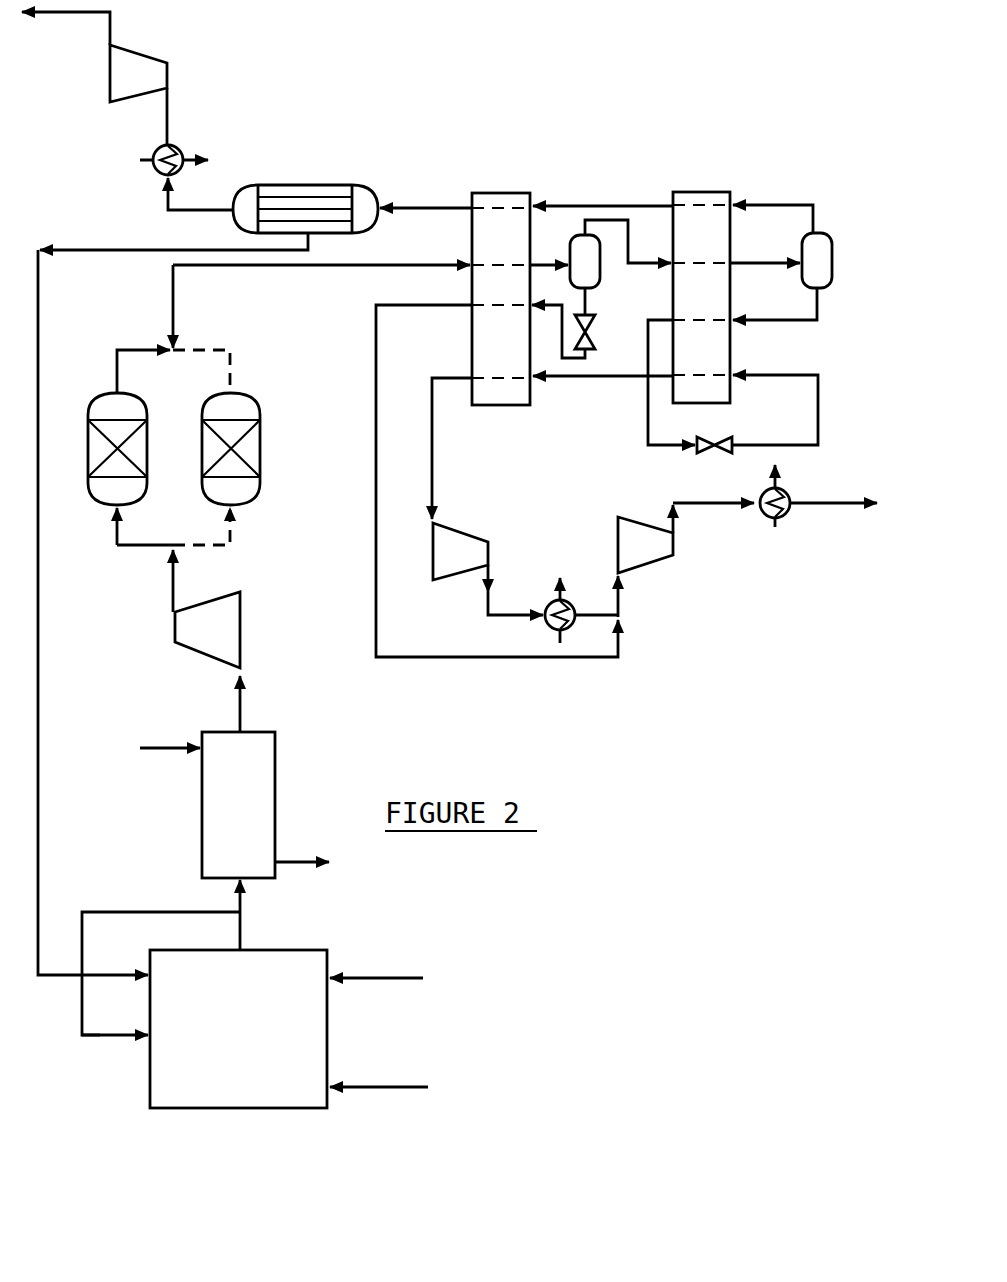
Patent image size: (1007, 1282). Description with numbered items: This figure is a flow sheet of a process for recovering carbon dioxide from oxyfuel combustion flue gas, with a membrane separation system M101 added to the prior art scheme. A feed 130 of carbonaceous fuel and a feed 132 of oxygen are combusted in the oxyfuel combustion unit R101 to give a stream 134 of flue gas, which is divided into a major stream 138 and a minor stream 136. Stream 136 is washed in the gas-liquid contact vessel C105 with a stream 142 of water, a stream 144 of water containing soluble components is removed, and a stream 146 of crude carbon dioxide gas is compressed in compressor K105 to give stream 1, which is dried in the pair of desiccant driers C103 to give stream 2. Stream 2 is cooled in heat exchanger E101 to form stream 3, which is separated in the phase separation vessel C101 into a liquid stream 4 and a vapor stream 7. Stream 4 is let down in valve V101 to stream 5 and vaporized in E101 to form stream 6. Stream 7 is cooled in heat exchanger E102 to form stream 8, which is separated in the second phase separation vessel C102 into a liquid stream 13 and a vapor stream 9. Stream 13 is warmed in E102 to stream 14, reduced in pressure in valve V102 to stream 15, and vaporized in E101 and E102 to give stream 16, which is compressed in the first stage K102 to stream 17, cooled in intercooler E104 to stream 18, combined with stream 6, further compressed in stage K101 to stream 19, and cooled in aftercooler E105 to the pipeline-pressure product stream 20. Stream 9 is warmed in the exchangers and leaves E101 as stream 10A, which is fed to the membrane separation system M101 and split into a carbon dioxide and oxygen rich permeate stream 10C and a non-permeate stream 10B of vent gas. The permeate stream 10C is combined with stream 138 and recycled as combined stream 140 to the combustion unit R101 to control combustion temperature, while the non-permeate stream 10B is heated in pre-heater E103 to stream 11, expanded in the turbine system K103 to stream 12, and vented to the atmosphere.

The stream of compressed crude carbon dioxide 1 is at (175, 594).
The stream of dried waste carbon dioxide gas 2 is at (300, 268).
The stream of crude gaseous carbon dioxide 3 is at (553, 250).
The stream of first carbon dioxide-enriched liquid 4 is at (588, 308).
The stream of reduced pressure first carbon dioxide-enriched liquid 5 is at (552, 310).
The stream of first carbon dioxide-enriched gas 6 is at (375, 333).
The stream of first vapor 7 is at (648, 262).
The stream of partially condensed fluid 8 is at (778, 262).
The stream of second vapor 9 is at (800, 203).
The stream of warmed second gas 10A is at (418, 206).
The non-permeate stream of vent gas 10B is at (198, 212).
The permeate stream 10C is at (40, 322).
The stream of heated vent gas 11 is at (168, 118).
The stream of expanded vent gas 12 is at (85, 15).
The stream of second carbon dioxide-enriched liquid 13 is at (816, 321).
The stream of warmed second carbon dioxide-enriched liquid 14 is at (648, 438).
The stream of reduced pressure second carbon dioxide-enriched liquid 15 is at (823, 403).
The stream of second carbon dioxide-enriched gas 16 is at (432, 440).
The stream of compressed carbon dioxide gas 17 is at (501, 613).
The stream of cooled compressed carbon dioxide gas 18 is at (614, 611).
The stream of further compressed carbon dioxide gas 19 is at (727, 508).
The stream of cooled further compressed carbon dioxide gas 20 is at (853, 504).
The feed of carbonaceous fuel 130 is at (405, 983).
The feed of oxygen 132 is at (407, 1090).
The stream of flue gas 134 is at (242, 928).
The minor part of flue gas stream 136 is at (242, 895).
The major part of flue gas stream 138 is at (160, 911).
The combined recycle stream 140 is at (97, 1038).
The stream of water 142 is at (153, 747).
The stream of water comprising water soluble components 144 is at (312, 860).
The stream of crude carbon dioxide gas 146 is at (242, 697).
The turbine system K103 is at (133, 51).
The pre-heater E103 is at (163, 180).
The membrane separation system M101 is at (327, 184).
The heat exchanger E101 is at (527, 193).
The heat exchanger E102 is at (723, 191).
The phase separation vessel C101 is at (602, 250).
The valve V101 is at (598, 353).
The second phase separation vessel C102 is at (832, 243).
The valve V102 is at (708, 452).
The second or further compressor stage K101 is at (642, 524).
The first compressor stage K102 is at (450, 578).
The intercooler E104 is at (546, 622).
The aftercooler E105 is at (767, 521).
The thermally regenerated desiccant driers C103 is at (262, 453).
The compressor K105 is at (241, 618).
The gas-liquid contact vessel C105 is at (276, 760).
The oxyfuel combustion unit R101 is at (267, 1110).